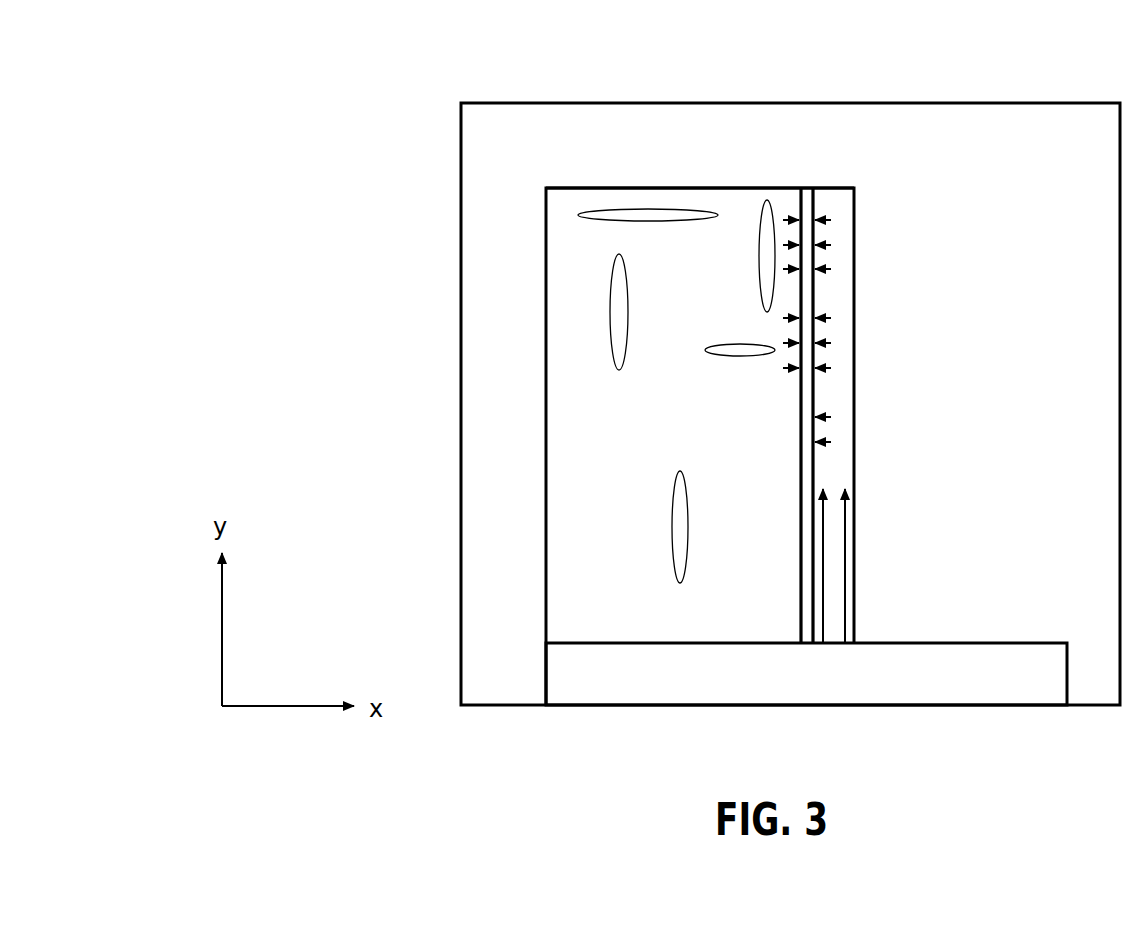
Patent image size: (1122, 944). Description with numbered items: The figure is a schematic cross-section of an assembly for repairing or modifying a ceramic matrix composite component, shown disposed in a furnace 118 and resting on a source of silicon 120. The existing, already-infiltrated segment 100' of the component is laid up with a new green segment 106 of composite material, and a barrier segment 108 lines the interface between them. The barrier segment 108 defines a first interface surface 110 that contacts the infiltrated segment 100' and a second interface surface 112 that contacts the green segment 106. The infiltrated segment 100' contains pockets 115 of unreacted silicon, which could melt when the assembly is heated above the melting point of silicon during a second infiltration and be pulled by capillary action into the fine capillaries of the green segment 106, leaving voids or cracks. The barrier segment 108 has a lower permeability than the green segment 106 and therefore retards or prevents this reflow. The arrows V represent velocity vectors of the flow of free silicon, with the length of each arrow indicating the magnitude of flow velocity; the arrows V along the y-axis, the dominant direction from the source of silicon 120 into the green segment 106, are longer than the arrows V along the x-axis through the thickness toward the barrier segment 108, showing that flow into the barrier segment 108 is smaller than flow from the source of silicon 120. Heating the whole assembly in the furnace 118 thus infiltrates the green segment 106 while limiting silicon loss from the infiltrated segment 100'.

The furnace 118 is at (1018, 103).
The source of silicon 120 is at (955, 655).
The infiltrated segment 100' is at (661, 437).
The first interface surface 110 is at (797, 496).
The second interface surface 112 is at (817, 468).
The barrier segment 108 is at (805, 207).
The green segment 106 is at (835, 205).
The arrows representing velocity vectors V is at (792, 316).
The pockets of unreacted silicon 115 is at (622, 302).